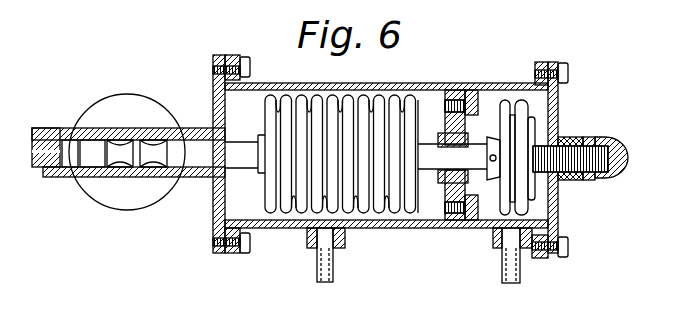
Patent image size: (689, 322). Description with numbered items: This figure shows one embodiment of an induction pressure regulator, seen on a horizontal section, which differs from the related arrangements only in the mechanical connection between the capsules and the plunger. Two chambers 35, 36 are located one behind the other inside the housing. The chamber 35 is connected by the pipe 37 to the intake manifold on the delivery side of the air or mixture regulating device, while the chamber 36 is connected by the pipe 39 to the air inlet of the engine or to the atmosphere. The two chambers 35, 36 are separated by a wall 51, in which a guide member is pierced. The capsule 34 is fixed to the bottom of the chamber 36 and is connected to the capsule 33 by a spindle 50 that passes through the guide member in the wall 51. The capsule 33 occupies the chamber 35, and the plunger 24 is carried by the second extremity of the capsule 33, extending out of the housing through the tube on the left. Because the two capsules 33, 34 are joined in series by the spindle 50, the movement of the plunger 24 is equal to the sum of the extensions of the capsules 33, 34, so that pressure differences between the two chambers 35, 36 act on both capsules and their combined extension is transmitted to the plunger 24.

The plunger 24 is at (183, 150).
The capsule 33 is at (307, 168).
The capsule 34 is at (508, 107).
The chamber 35 is at (367, 216).
The chamber 36 is at (538, 216).
The pipe 37 is at (323, 276).
The pipe 39 is at (512, 276).
The spindle 50 is at (428, 155).
The wall 51 is at (467, 110).